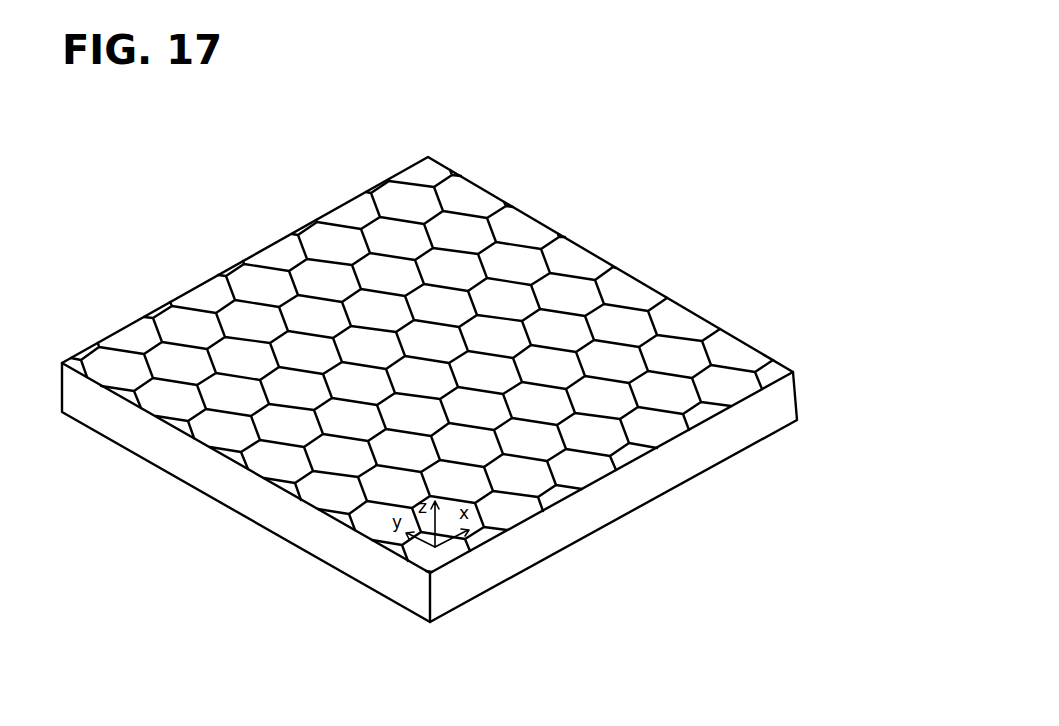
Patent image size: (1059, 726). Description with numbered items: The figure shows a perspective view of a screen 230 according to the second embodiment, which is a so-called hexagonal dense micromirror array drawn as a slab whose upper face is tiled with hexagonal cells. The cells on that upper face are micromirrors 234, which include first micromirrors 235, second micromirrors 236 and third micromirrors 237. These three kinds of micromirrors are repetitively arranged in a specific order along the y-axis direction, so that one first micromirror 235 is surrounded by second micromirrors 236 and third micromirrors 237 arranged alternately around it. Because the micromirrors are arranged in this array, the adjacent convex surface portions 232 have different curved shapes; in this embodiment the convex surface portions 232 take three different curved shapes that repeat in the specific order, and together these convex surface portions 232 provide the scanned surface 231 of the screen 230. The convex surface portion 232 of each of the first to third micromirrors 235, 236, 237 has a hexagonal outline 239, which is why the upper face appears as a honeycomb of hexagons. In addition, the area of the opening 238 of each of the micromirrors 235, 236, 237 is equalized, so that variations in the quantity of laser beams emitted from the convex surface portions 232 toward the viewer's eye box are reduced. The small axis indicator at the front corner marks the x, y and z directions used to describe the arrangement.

The screen 230 is at (800, 392).
The scanned surface 231 is at (348, 213).
The convex surface portion 232 is at (598, 440).
The micromirrors 234 is at (822, 277).
The first micromirror 235 is at (465, 200).
The second micromirror 236 is at (395, 182).
The third micromirror 237 is at (520, 245).
The opening 238 is at (235, 320).
The hexagonal outline 239 is at (250, 262).